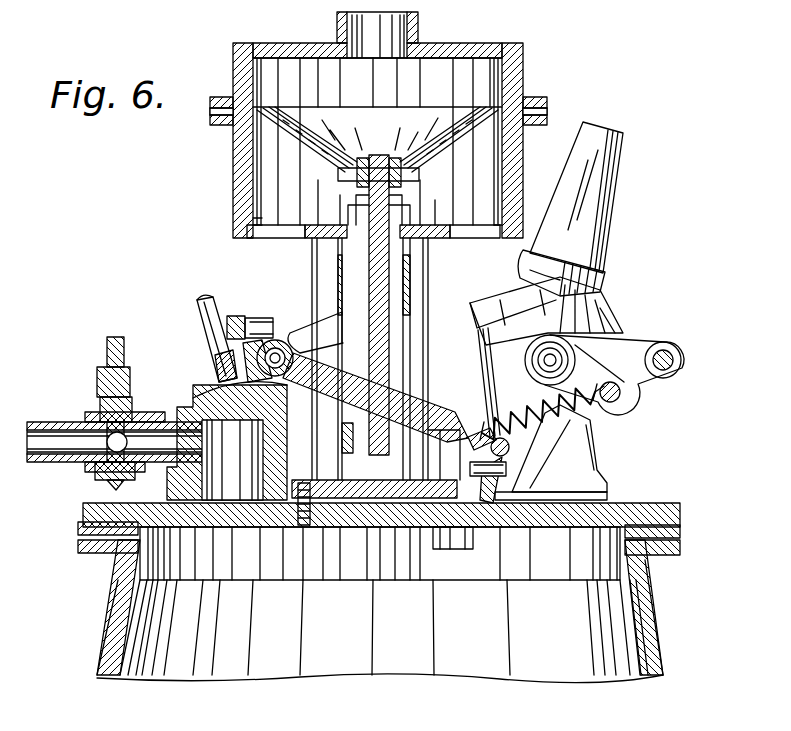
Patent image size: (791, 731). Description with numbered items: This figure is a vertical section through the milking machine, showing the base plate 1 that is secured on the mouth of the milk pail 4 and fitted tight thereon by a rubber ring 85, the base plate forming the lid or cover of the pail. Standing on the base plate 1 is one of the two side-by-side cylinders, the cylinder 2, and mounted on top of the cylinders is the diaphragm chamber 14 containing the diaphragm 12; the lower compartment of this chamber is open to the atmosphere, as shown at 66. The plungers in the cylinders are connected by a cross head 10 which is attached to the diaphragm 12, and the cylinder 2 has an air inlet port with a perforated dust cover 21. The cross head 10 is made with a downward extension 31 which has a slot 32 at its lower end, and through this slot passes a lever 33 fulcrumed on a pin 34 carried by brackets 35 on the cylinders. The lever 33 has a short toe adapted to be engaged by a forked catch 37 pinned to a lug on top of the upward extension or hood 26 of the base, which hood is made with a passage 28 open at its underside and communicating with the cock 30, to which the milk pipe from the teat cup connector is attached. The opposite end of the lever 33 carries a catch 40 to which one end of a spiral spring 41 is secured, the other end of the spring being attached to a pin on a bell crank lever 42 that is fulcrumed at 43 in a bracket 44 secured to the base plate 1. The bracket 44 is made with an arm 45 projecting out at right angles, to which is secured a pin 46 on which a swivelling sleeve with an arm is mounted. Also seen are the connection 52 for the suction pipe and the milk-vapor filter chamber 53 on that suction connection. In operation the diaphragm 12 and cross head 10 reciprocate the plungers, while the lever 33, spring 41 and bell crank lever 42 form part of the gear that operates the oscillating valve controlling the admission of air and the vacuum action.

The base plate 1 is at (547, 565).
The cylinder 2 is at (335, 262).
The milk pail 4 is at (340, 635).
The cross head 10 is at (250, 192).
The diaphragm 12 is at (515, 112).
The diaphragm chamber 14 is at (247, 160).
The perforated dust cover 21 is at (305, 352).
The upward extension or hood 26 is at (190, 405).
The passage 28 is at (222, 478).
The cock 30 is at (78, 410).
The downward extension 31 is at (380, 263).
The slot 32 is at (398, 378).
The lever 33 is at (420, 410).
The pin 34 is at (262, 340).
The bracket 35 is at (325, 334).
The forked catch 37 is at (202, 305).
The catch 40 is at (565, 478).
The spiral spring 41 is at (618, 392).
The bell crank lever 42 is at (570, 420).
The fulcrum 43 is at (598, 270).
The bracket 44 is at (560, 466).
The arm 45 is at (548, 365).
The pin 46 is at (670, 352).
The suction pipe connection 52 is at (618, 156).
The milk-vapor filter chamber 53 is at (500, 300).
The opening to atmosphere 66 is at (268, 243).
The rubber ring 85 is at (85, 527).